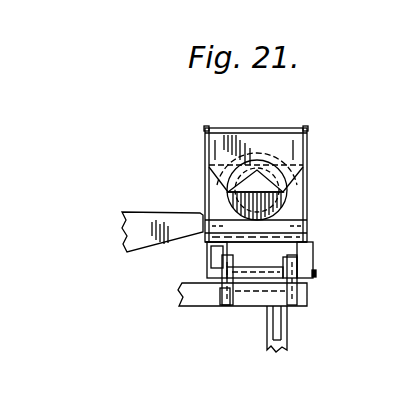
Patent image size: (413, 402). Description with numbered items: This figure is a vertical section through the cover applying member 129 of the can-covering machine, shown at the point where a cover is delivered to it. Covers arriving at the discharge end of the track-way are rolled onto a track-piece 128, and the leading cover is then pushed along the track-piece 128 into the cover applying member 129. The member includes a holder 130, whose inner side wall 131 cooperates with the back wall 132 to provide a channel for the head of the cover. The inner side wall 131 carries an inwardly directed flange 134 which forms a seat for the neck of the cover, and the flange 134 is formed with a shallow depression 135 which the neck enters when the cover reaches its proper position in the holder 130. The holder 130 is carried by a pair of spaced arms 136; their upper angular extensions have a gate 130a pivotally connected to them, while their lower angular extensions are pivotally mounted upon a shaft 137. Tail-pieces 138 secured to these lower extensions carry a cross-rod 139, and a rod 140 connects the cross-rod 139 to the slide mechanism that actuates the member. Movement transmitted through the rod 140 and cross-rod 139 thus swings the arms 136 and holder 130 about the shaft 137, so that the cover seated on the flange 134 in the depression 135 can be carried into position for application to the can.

The track-piece 128 is at (165, 196).
The cover applying member 129 is at (312, 97).
The holder 130 is at (305, 195).
The gate 130a is at (303, 154).
The inner side wall 131 is at (304, 255).
The back wall 132 is at (302, 179).
The inwardly directed flange 134 is at (306, 219).
The shallow depression 135 is at (306, 234).
The spaced arms 136 is at (207, 249).
The shaft 137 is at (253, 279).
The tail-pieces 138 is at (209, 305).
The cross-rod 139 is at (233, 303).
The rod 140 is at (288, 337).